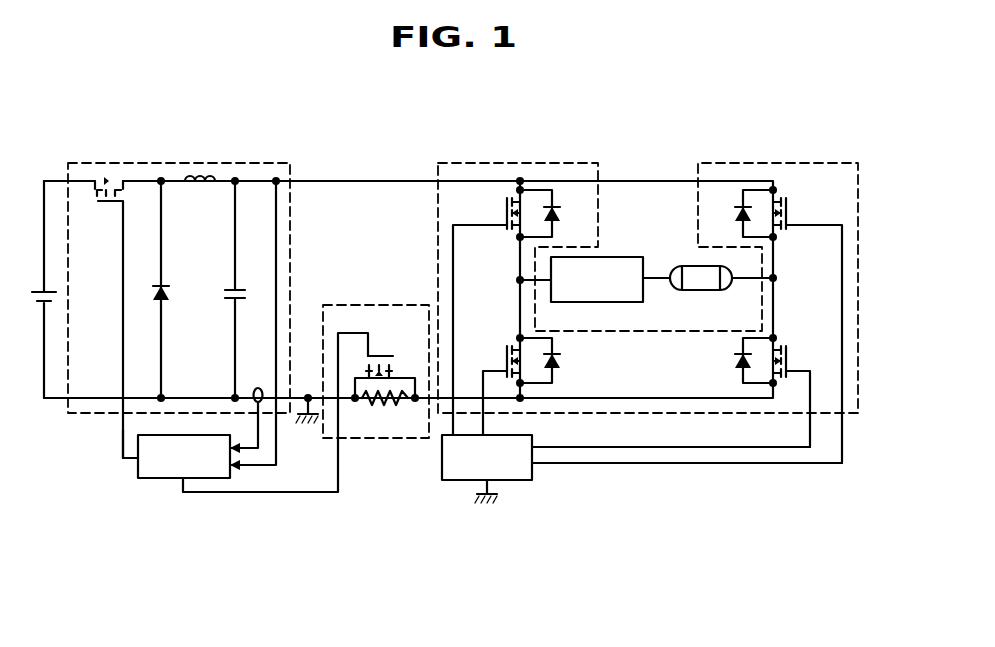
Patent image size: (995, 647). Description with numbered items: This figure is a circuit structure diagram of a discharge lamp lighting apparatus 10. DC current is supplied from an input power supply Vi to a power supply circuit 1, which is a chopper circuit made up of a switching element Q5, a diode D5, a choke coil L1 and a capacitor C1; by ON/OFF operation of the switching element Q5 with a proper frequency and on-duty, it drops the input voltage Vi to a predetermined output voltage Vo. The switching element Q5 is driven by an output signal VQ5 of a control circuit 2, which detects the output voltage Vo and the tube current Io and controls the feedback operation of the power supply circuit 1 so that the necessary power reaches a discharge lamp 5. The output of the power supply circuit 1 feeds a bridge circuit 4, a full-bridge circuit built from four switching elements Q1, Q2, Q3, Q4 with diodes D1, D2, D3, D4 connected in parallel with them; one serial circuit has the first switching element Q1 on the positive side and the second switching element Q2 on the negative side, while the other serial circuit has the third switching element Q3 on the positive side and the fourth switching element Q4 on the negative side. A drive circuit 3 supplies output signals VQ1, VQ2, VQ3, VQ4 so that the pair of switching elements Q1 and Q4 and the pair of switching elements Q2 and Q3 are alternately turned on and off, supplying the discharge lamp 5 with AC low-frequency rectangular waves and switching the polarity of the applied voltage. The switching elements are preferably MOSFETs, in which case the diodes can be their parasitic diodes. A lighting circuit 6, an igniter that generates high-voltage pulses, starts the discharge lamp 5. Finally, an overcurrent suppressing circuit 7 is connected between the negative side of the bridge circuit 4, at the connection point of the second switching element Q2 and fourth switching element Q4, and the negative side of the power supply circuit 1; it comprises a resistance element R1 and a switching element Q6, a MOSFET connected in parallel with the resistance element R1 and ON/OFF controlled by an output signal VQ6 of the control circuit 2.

The power supply circuit 1 is at (290, 163).
The control circuit 2 is at (138, 471).
The drive circuit 3 is at (442, 470).
The bridge circuit 4 is at (598, 165).
The discharge lamp 5 is at (708, 300).
The lighting circuit 6 is at (622, 257).
The overcurrent suppressing circuit 7 is at (336, 305).
The discharge lamp lighting apparatus 10 is at (403, 534).
The first switching element Q1 is at (488, 306).
The second switching element Q2 is at (493, 384).
The third switching element Q3 is at (805, 324).
The fourth switching element Q4 is at (798, 390).
The switching element Q5 is at (115, 317).
The switching element Q6 is at (385, 365).
The diode D1 is at (555, 213).
The diode D2 is at (555, 360).
The diode D3 is at (739, 213).
The diode D4 is at (739, 360).
The diode D5 is at (176, 289).
The choke coil L1 is at (200, 197).
The capacitor C1 is at (250, 289).
The resistance element R1 is at (385, 412).
The input power supply Vi is at (32, 289).
The output voltage Vo is at (276, 181).
The tube current Io is at (692, 261).
The output signal VQ1 is at (442, 446).
The output signal VQ2 is at (483, 421).
The output signal VQ3 is at (735, 464).
The output signal VQ4 is at (651, 447).
The output signal VQ5 is at (122, 436).
The output signal VQ6 is at (322, 494).